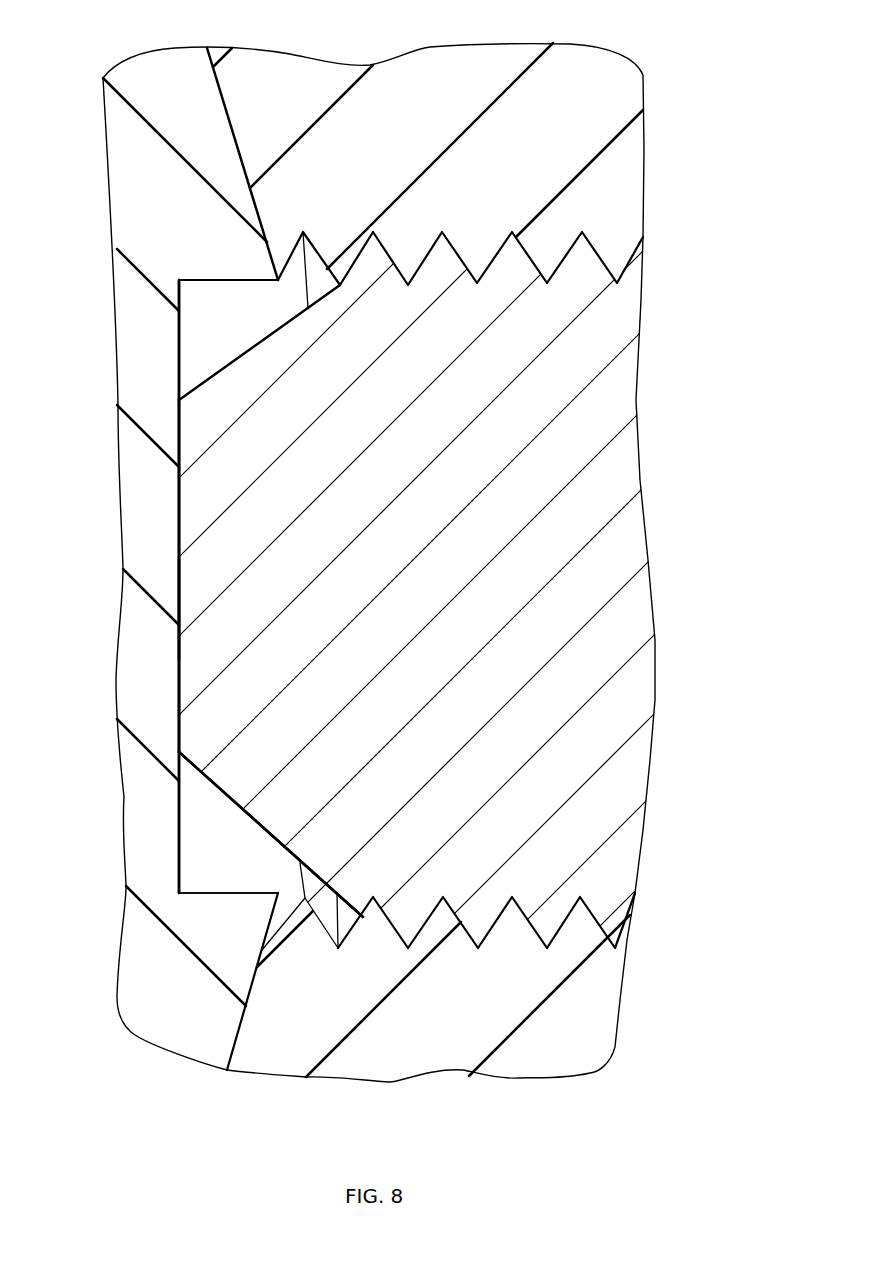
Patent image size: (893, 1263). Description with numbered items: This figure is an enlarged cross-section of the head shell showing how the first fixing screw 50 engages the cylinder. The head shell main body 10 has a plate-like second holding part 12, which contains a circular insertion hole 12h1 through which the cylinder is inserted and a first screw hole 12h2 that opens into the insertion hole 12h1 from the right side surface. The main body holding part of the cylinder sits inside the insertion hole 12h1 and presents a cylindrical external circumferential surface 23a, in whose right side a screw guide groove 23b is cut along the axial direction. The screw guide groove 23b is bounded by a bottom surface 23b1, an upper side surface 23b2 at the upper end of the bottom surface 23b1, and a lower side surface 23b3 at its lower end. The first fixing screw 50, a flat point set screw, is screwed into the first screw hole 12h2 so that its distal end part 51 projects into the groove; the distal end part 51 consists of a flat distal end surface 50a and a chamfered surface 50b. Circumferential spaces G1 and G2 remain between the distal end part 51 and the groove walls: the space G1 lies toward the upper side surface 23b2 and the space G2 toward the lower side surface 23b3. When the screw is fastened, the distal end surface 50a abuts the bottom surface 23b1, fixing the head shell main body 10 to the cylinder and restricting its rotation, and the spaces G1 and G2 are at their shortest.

The head shell main body 10 is at (446, 560).
The second holding part 12 is at (590, 110).
The insertion hole 12h1 is at (222, 86).
The first screw hole 12h2 is at (457, 252).
The external circumferential surface 23a is at (229, 118).
The screw guide groove 23b is at (168, 560).
The bottom surface 23b1 is at (182, 331).
The upper side surface 23b2 is at (226, 282).
The lower side surface 23b3 is at (243, 891).
The first fixing screw 50 is at (640, 407).
The distal end surface 50a is at (184, 482).
The chamfered surface 50b is at (222, 793).
The distal end part 51 is at (188, 610).
The space G1 is at (274, 313).
The space G2 is at (272, 873).